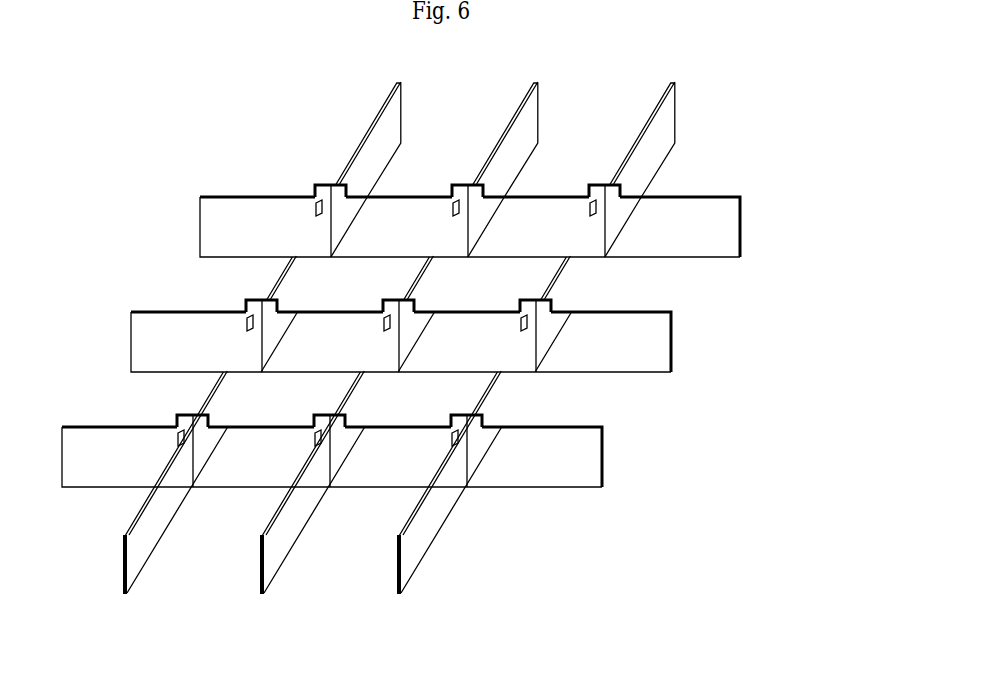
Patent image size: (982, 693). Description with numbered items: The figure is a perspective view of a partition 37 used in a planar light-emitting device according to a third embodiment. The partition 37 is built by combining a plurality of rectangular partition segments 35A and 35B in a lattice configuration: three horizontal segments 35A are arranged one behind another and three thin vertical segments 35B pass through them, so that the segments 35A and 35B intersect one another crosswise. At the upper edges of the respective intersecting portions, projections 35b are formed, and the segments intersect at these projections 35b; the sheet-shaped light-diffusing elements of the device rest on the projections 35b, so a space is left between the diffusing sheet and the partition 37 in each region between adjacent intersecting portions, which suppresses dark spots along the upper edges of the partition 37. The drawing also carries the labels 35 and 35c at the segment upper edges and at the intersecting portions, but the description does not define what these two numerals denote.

The partition member (lattice) 35 is at (439, 318).
The partition segment 35A is at (712, 195).
The partition segment 35B is at (399, 100).
The projection 35b is at (333, 178).
The notch of first partition plate 35c is at (192, 415).
The partition 37 is at (446, 318).